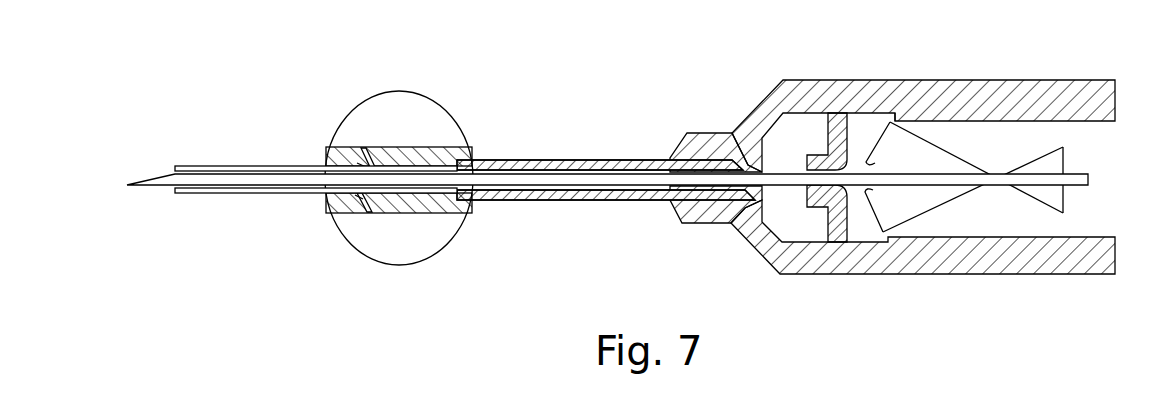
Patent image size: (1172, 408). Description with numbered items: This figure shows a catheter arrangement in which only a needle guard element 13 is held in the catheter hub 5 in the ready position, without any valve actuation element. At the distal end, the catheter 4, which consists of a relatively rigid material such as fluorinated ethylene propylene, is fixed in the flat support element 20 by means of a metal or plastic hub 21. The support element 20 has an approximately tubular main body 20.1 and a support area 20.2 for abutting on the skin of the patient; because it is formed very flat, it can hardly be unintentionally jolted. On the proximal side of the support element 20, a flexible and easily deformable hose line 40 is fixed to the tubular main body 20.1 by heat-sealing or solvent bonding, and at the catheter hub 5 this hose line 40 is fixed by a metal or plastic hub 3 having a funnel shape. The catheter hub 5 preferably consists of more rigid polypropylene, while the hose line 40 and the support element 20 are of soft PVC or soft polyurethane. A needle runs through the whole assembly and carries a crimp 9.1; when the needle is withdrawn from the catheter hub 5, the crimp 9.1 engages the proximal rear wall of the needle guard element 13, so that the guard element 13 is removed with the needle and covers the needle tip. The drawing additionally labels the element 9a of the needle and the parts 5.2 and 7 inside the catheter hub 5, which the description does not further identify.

The hub 3 is at (687, 133).
The catheter 4 is at (280, 190).
The catheter hub 5 is at (923, 141).
The housing step 5.2 is at (898, 111).
The seal insert 7 is at (828, 246).
The needle 9a is at (165, 188).
The crimp 9.1 is at (198, 164).
The needle guard element 13 is at (928, 222).
The support element 20 is at (478, 100).
The tubular main body 20.1 is at (383, 214).
The support area 20.2 is at (408, 118).
The hub 21 is at (358, 148).
The hose line 40 is at (558, 196).